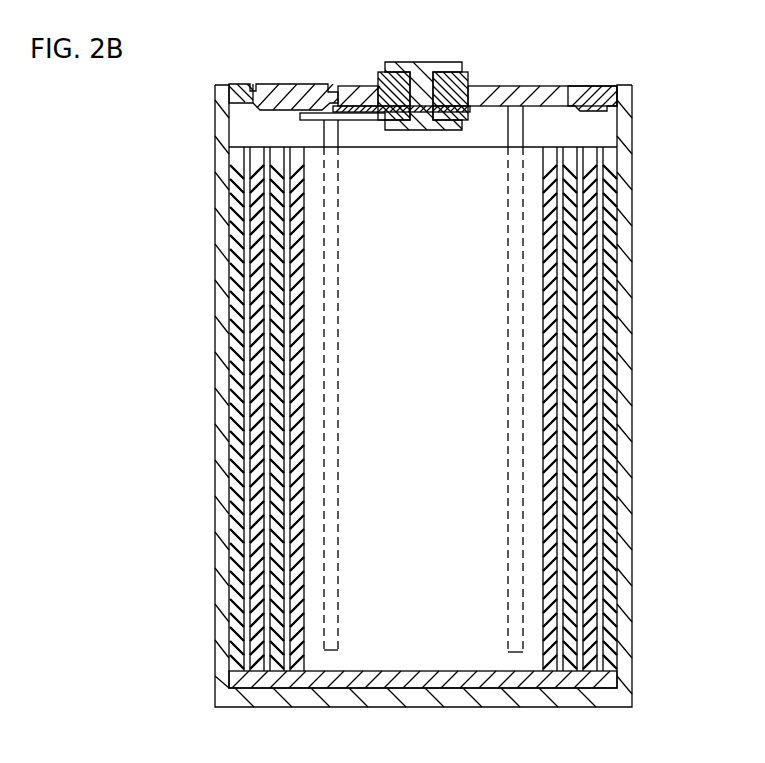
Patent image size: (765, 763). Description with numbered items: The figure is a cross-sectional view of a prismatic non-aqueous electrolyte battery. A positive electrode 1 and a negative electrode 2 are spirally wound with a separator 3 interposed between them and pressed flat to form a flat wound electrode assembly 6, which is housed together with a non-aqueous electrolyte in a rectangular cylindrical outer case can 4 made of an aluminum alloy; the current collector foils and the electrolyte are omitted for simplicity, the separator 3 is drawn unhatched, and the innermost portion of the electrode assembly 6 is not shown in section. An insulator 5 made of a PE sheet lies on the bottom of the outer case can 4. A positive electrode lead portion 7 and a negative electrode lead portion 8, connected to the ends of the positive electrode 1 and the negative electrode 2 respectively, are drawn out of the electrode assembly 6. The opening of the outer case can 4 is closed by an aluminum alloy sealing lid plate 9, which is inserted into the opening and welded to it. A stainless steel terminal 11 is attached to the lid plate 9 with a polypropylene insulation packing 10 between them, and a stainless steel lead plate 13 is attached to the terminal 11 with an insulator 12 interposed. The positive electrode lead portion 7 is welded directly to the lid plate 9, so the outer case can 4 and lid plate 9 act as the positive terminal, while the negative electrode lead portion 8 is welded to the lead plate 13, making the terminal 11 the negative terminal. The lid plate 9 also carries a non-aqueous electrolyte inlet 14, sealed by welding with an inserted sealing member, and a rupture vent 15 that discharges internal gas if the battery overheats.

The positive electrode 1 is at (237, 348).
The negative electrode 2 is at (255, 430).
The separator 3 is at (247, 386).
The outer case can 4 is at (625, 407).
The insulator 5 is at (414, 686).
The flat wound electrode assembly 6 is at (394, 409).
The positive electrode lead portion 7 is at (518, 130).
The negative electrode lead portion 8 is at (330, 132).
The sealing lid plate 9 is at (548, 90).
The insulation packing 10 is at (473, 88).
The terminal 11 is at (422, 75).
The insulator 12 is at (372, 107).
The lead plate 13 is at (352, 107).
The non-aqueous electrolyte inlet 14 is at (598, 95).
The rupture vent 15 is at (297, 86).